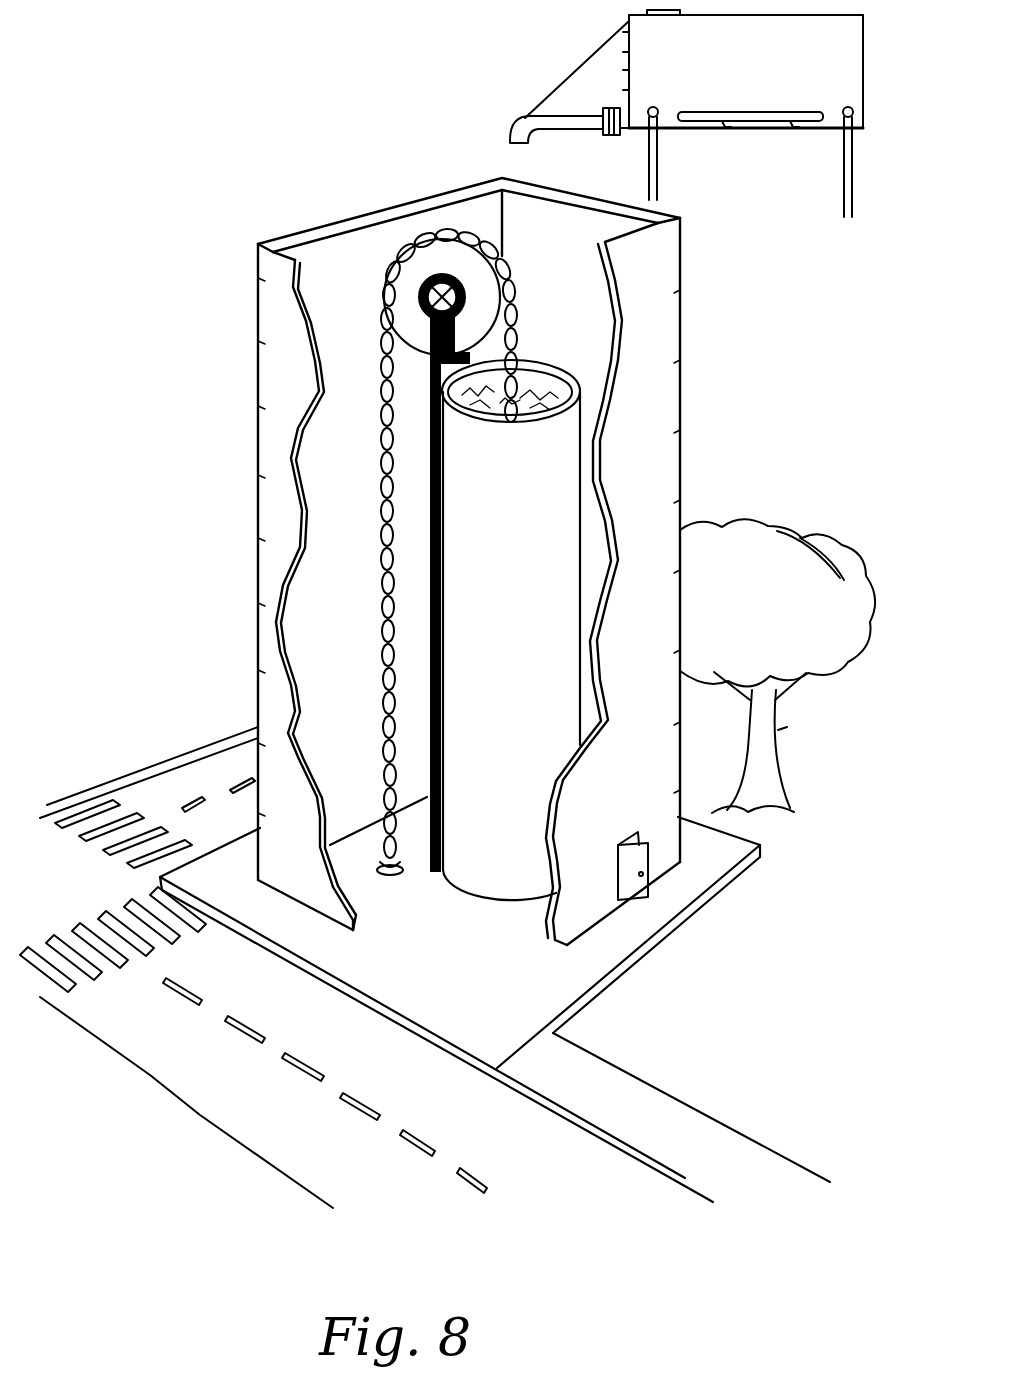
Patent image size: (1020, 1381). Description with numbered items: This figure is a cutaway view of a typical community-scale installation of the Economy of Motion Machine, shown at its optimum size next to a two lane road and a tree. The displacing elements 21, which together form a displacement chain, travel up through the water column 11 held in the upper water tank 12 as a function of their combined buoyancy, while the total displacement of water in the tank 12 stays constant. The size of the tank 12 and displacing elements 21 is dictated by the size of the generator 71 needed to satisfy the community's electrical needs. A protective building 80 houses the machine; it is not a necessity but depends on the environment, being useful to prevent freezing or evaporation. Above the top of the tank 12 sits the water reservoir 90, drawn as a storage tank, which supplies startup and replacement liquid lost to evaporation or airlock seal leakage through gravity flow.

The water column 11 is at (548, 390).
The water tank 12 is at (495, 610).
The displacing elements 21 is at (382, 618).
The generator 71 is at (426, 285).
The protective building 80 is at (617, 806).
The water reservoir 90 is at (735, 78).